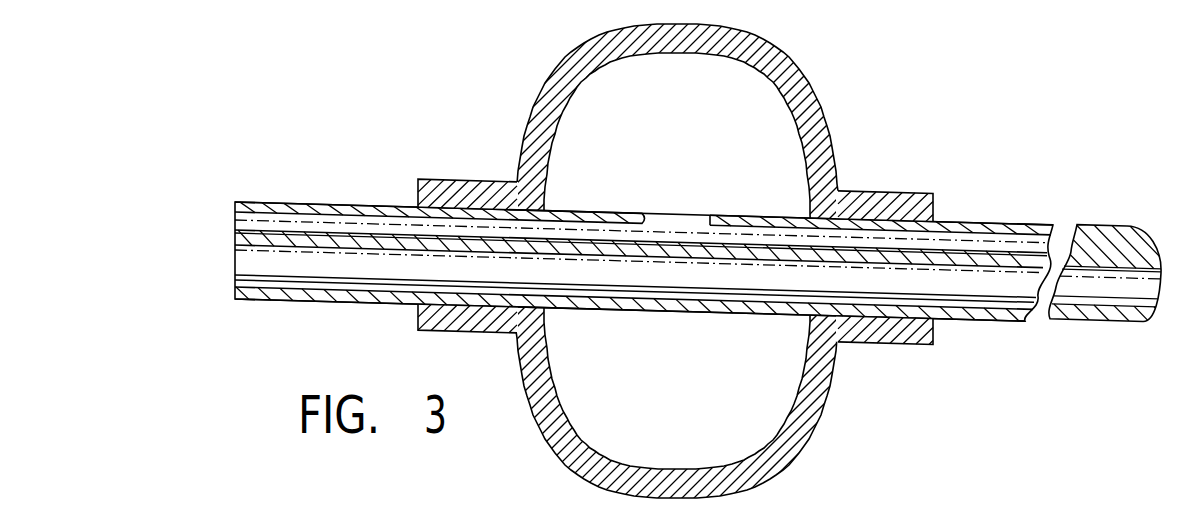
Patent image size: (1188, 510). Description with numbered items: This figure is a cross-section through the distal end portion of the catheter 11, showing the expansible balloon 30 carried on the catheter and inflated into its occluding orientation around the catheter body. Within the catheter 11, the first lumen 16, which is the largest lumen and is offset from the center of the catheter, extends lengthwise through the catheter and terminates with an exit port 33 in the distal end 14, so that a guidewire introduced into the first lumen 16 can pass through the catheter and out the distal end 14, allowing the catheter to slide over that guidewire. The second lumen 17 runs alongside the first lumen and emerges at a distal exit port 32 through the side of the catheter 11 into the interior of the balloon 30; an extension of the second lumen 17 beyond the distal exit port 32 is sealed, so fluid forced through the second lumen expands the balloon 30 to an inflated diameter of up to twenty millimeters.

The catheter 11 is at (350, 176).
The distal end 14 is at (1113, 234).
The first lumen 16 is at (285, 275).
The second lumen 17 is at (267, 220).
The expansible balloon 30 is at (800, 88).
The distal exit port 32 is at (660, 176).
The exit port 33 is at (1157, 303).